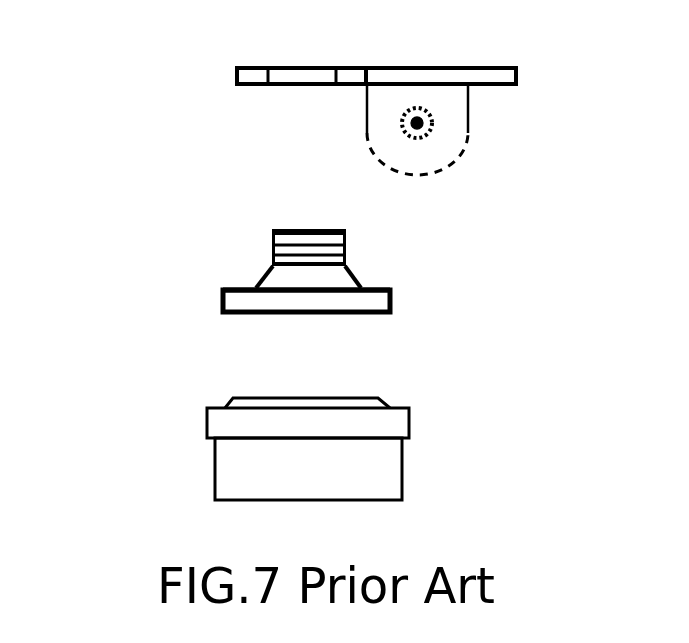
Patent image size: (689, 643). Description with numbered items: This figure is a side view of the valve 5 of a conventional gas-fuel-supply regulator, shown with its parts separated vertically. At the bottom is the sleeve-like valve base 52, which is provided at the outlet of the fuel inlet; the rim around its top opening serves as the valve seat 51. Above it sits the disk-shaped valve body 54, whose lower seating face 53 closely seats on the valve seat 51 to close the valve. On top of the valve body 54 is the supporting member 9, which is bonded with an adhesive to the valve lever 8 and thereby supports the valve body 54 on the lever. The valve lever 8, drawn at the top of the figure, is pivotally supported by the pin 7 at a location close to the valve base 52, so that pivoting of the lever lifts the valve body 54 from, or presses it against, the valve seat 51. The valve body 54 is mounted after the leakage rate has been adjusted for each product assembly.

The valve 5 is at (170, 302).
The pin 7 is at (428, 131).
The valve lever 8 is at (447, 68).
The supporting member 9 is at (273, 232).
The valve seat 51 is at (263, 397).
The valve base 52 is at (235, 457).
The seating face 53 is at (350, 315).
The valve body 54 is at (362, 297).